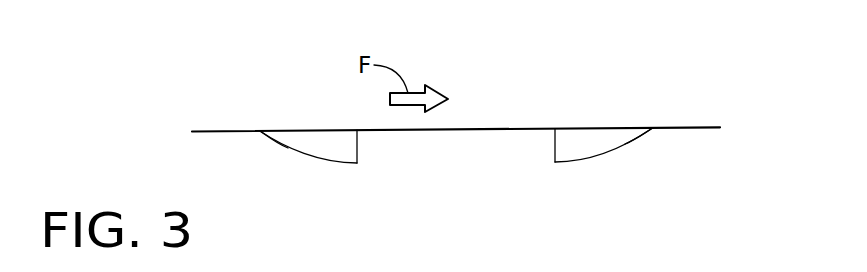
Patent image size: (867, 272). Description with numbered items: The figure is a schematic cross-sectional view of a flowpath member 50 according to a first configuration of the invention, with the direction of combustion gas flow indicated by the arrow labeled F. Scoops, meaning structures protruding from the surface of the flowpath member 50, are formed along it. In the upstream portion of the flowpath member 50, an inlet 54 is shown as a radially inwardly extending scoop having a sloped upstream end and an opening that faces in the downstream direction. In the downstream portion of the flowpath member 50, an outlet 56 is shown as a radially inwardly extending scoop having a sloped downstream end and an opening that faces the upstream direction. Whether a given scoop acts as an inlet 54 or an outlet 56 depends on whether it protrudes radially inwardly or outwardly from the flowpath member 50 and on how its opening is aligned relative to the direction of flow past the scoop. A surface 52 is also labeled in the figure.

The flowpath member 50 is at (655, 64).
The surface 52 is at (458, 223).
The inlets 54 is at (313, 157).
The outlets 56 is at (600, 158).